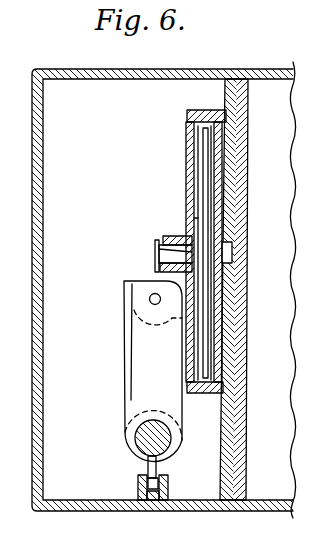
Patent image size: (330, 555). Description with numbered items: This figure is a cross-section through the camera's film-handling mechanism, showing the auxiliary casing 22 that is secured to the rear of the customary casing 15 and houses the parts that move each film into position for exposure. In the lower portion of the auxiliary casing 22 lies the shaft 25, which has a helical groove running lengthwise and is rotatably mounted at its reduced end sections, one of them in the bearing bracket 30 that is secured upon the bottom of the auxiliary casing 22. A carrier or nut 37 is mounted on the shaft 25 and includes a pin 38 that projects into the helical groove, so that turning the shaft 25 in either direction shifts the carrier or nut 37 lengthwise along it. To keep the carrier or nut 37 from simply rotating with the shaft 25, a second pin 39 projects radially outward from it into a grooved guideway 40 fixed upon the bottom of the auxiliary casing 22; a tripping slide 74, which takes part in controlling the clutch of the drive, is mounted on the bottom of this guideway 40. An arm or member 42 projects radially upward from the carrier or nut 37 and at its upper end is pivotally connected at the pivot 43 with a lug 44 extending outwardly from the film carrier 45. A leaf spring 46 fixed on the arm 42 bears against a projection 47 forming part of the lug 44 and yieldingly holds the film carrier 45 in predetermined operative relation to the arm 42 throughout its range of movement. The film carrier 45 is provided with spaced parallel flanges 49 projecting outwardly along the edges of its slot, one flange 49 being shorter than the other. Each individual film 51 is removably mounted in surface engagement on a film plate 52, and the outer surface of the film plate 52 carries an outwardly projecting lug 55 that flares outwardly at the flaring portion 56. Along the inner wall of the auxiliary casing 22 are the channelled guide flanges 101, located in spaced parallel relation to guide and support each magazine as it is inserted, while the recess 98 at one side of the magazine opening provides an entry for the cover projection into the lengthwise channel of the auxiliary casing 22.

The casing 15 is at (281, 71).
The auxiliary casing 22 is at (93, 80).
The shaft 25 is at (143, 443).
The bearing bracket 30 is at (128, 449).
The carrier or nut 37 is at (125, 414).
The pin 38 is at (70, 459).
The second pin 39 is at (158, 482).
The grooved guideway 40 is at (137, 485).
The arm or member 42 is at (126, 360).
The pivot 43 is at (150, 301).
The lug 44 is at (180, 291).
The film carrier 45 is at (183, 263).
The leaf spring 46 is at (126, 297).
The projection 47 is at (128, 282).
The flanges 49 is at (186, 226).
The film 51 is at (249, 160).
The film plate 52 is at (190, 176).
The lug 55 is at (185, 240).
The flaring portion 56 is at (155, 251).
The tripping slide 74 is at (156, 496).
The recess 98 is at (234, 254).
The channelled guide flanges 101 is at (203, 110).